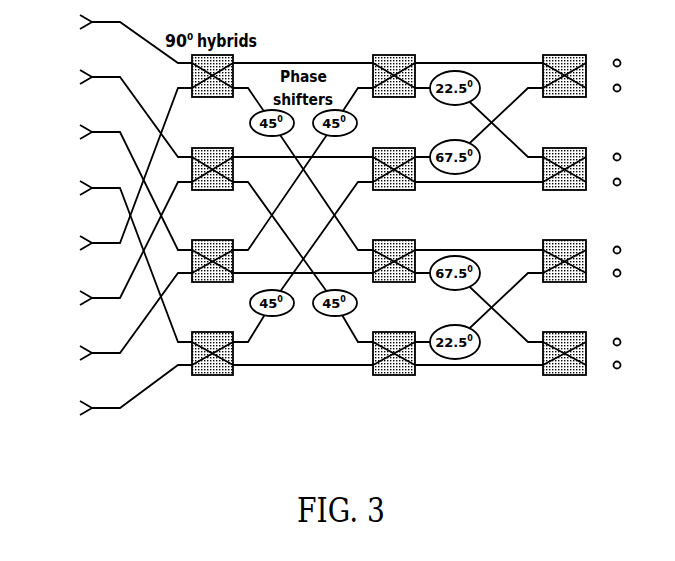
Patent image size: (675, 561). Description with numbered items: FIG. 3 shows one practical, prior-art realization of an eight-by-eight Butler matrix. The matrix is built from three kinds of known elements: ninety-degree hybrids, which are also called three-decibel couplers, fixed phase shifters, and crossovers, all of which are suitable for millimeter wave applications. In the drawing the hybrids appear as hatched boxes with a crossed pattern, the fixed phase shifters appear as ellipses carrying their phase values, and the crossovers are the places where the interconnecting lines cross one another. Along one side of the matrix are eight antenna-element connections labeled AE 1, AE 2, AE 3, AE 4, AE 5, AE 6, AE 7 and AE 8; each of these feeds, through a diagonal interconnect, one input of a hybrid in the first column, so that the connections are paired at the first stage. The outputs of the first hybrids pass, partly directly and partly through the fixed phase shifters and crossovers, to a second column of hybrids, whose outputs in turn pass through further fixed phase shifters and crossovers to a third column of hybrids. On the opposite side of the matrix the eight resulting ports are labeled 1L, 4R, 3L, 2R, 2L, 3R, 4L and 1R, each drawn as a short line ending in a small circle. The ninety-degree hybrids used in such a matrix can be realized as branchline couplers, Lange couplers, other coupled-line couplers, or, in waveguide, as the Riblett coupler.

The antenna element 1 AE 1 is at (108, 38).
The antenna element 2 AE 2 is at (108, 112).
The antenna element 3 AE 3 is at (108, 186).
The antenna element 4 AE 4 is at (108, 260).
The antenna element 5 AE 5 is at (108, 170).
The antenna element 6 AE 6 is at (108, 245).
The antenna element 7 AE 7 is at (108, 318).
The antenna element 8 AE 8 is at (108, 391).
The beam port 1L is at (586, 63).
The beam port 4R is at (586, 88).
The beam port 3L is at (586, 157).
The beam port 2R is at (586, 182).
The beam port 2L is at (586, 250).
The beam port 3R is at (586, 273).
The beam port 4L is at (586, 342).
The beam port 1R is at (586, 365).